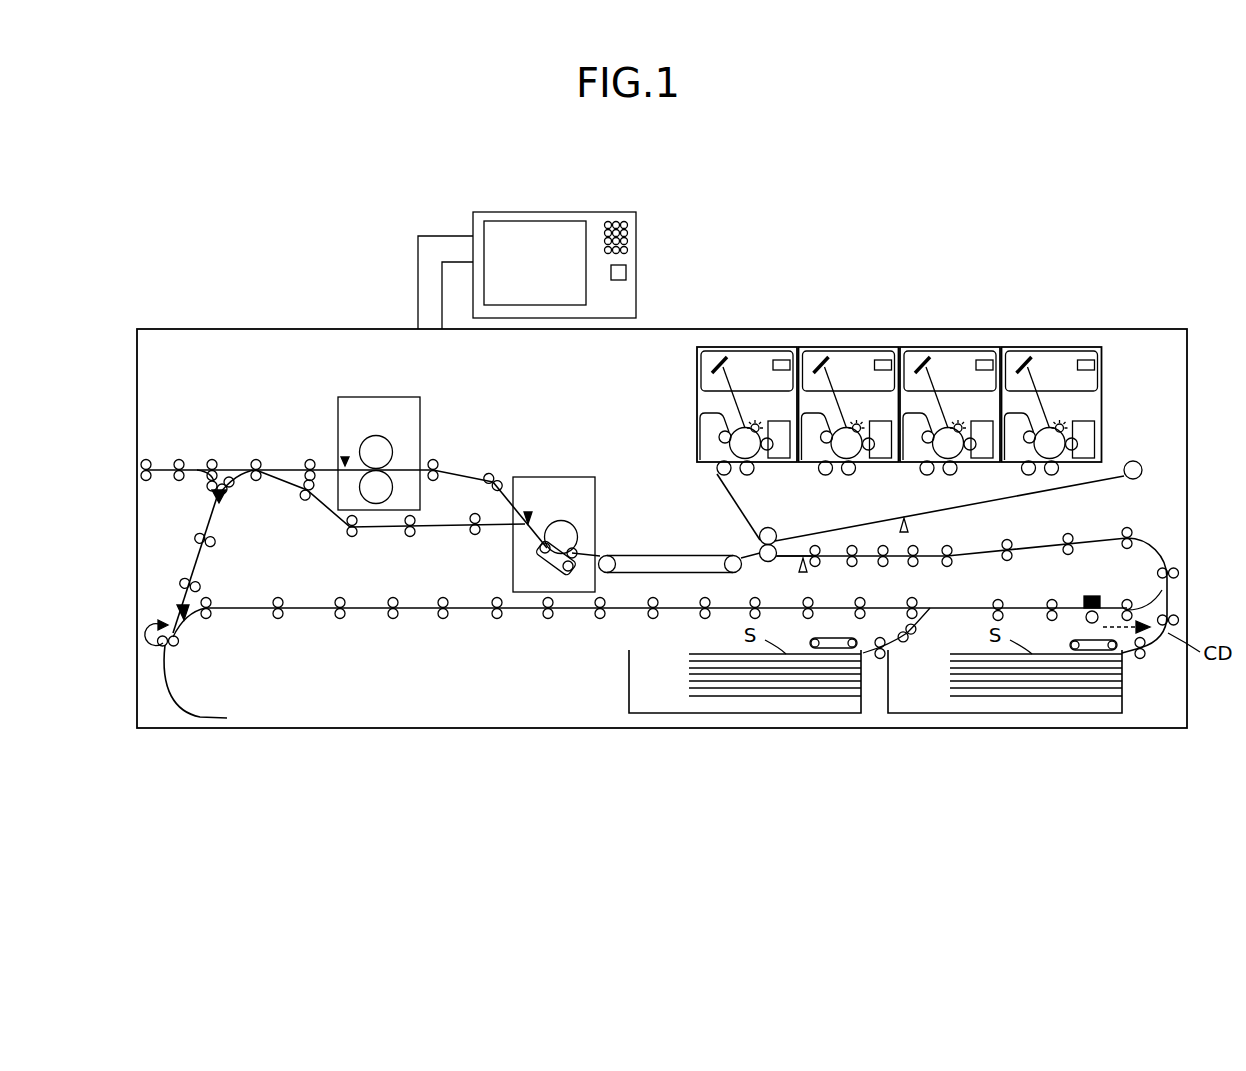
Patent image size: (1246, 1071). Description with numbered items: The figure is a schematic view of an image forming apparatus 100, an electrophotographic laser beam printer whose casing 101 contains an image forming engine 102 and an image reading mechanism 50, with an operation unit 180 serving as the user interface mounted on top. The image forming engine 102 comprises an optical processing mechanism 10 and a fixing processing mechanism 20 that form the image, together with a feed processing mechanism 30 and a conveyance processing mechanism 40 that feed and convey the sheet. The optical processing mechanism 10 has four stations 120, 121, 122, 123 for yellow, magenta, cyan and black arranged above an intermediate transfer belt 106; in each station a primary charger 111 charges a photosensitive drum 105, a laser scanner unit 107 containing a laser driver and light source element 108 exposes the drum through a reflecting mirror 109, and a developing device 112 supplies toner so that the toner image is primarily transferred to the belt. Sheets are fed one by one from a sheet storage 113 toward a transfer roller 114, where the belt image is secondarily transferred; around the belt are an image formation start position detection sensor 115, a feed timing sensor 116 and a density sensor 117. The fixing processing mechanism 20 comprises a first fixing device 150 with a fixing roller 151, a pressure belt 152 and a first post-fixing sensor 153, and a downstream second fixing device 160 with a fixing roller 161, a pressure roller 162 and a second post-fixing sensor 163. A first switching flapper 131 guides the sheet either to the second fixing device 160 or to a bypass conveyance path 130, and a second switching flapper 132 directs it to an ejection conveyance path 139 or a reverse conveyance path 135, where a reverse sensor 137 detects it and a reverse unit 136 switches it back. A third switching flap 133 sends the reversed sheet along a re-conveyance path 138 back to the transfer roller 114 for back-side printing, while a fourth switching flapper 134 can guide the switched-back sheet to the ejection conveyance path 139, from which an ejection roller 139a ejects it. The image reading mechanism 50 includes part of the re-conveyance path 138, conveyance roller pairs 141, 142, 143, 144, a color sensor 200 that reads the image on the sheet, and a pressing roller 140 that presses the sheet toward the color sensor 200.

The image forming apparatus 100 is at (749, 248).
The casing 101 is at (1152, 328).
The image forming engine 102 is at (1122, 282).
The optical processing mechanism 10 is at (690, 412).
The fixing processing mechanism 20 is at (512, 400).
The feed processing mechanism 30 is at (865, 746).
The conveyance processing mechanism 40 is at (1150, 522).
The image reading mechanism 50 is at (1041, 572).
The photosensitive drum 105 is at (749, 457).
The intermediate transfer belt 106 is at (738, 513).
The laser scanner unit 107 is at (770, 350).
The light source 108 is at (773, 367).
The reflecting mirror 109 is at (709, 350).
The primary charger 111 is at (757, 425).
The developing device 112 is at (719, 455).
The sheet storage 113 is at (629, 680).
The transfer roller 114 is at (767, 563).
The image formation start position detection sensor 115 is at (912, 531).
The feed timing sensor 116 is at (810, 570).
The density sensor 117 is at (1134, 457).
The station 120 is at (732, 350).
The station 121 is at (834, 350).
The station 122 is at (935, 350).
The station 123 is at (1037, 350).
The bypass conveyance path 130 is at (387, 531).
The first switching flapper 131 is at (505, 527).
The second switching flapper 132 is at (245, 462).
The third switching flap 133 is at (178, 603).
The fourth switching flapper 134 is at (226, 499).
The reverse conveyance path 135 is at (209, 551).
The reverse unit 136 is at (177, 722).
The reverse sensor 137 is at (170, 652).
The re-conveyance path 138 is at (318, 605).
The ejection conveyance path 139 is at (162, 465).
The ejection roller 139a is at (146, 478).
The pressing roller 140 is at (1092, 622).
The conveyance roller pair 141 is at (1164, 572).
The conveyance roller pair 142 is at (1126, 604).
The conveyance roller pair 143 is at (1048, 606).
The conveyance roller pair 144 is at (994, 602).
The first fixing device 150 is at (556, 523).
The fixing roller 151 is at (560, 520).
The pressure belt 152 is at (552, 562).
The first post-fixing sensor 153 is at (527, 511).
The second fixing device 160 is at (383, 441).
The fixing roller 161 is at (376, 436).
The pressure roller 162 is at (373, 497).
The second post-fixing sensor 163 is at (344, 456).
The operation unit 180 is at (473, 222).
The color sensor 200 is at (1089, 596).